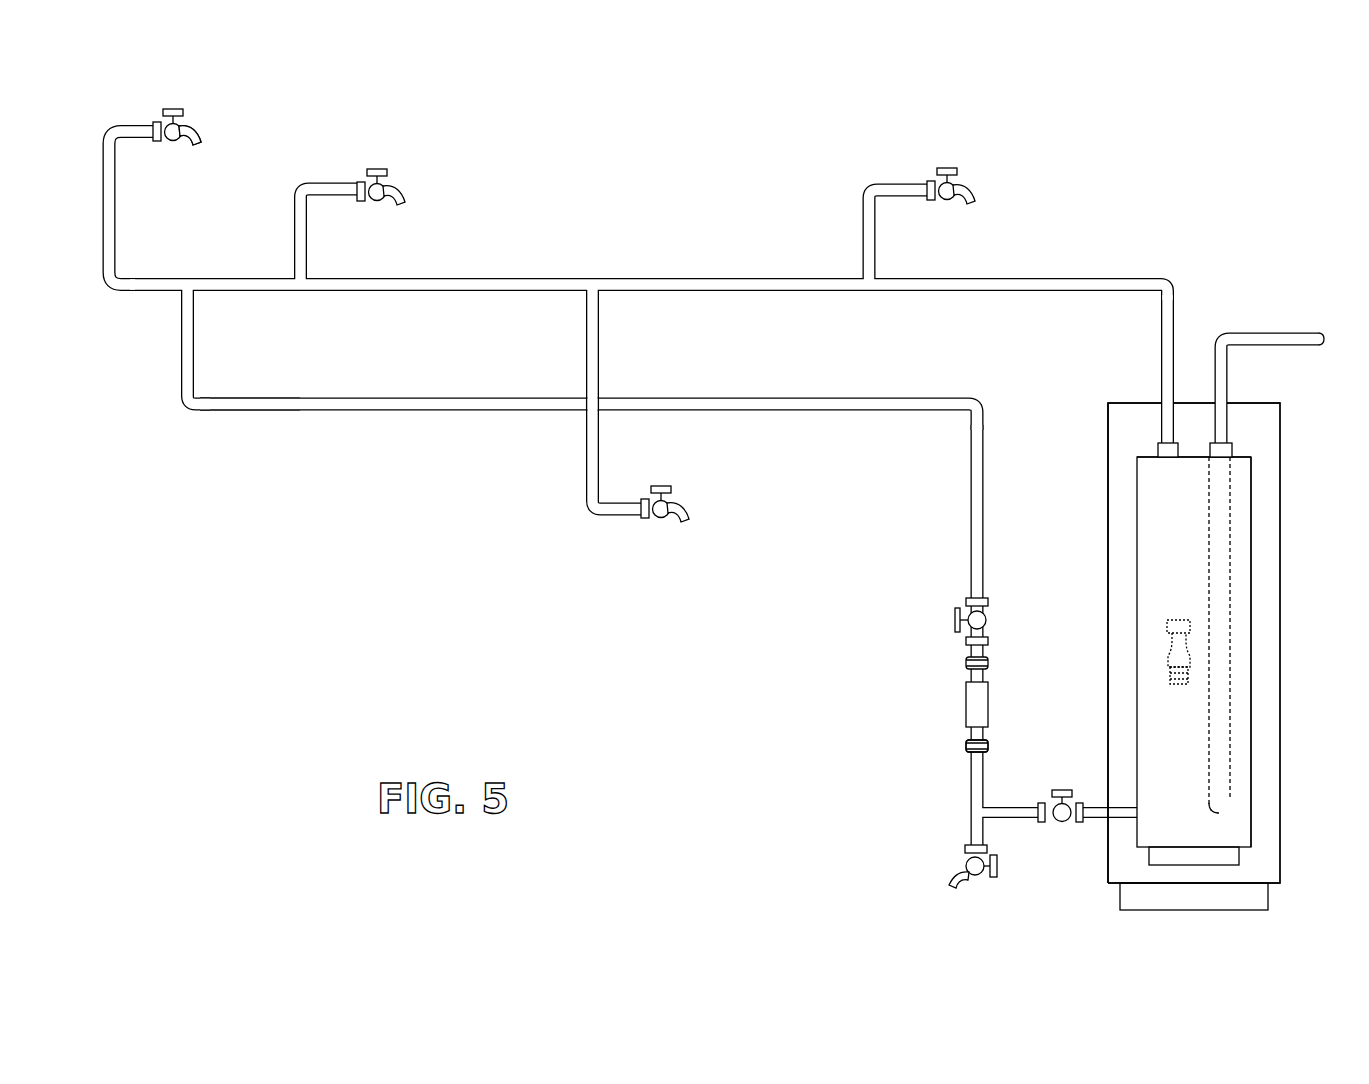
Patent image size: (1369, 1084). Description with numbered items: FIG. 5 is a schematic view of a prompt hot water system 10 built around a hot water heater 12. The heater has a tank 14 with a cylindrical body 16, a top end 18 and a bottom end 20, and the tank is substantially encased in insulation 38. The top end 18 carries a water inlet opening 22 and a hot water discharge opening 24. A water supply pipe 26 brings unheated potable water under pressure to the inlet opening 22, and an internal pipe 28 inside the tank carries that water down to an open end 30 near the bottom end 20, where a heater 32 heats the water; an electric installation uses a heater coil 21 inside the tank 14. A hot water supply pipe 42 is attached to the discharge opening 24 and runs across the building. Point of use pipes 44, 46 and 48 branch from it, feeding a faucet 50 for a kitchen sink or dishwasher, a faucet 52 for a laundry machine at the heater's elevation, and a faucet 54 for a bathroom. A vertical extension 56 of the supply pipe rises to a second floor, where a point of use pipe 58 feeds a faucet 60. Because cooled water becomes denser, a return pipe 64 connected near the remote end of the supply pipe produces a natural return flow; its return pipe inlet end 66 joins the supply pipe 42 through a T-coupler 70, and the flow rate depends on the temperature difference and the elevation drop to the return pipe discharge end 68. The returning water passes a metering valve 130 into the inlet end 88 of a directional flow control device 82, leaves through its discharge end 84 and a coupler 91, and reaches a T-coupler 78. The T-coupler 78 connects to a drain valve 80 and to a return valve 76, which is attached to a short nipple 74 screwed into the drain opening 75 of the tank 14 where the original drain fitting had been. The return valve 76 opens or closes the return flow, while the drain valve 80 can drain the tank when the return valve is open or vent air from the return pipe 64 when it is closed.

The hot water system 10 is at (890, 148).
The hot water heater 12 is at (1312, 729).
The tank 14 is at (1252, 498).
The cylindrical body 16 is at (1252, 557).
The top end 18 is at (1248, 457).
The bottom end 20 is at (1143, 851).
The heater coil 21 is at (1167, 658).
The water inlet opening 22 is at (1232, 452).
The hot water discharge opening 24 is at (1157, 450).
The water supply pipe 26 is at (1273, 332).
The internal pipe 28 is at (1237, 622).
The open end 30 is at (1219, 813).
The heater 32 is at (1239, 857).
The insulation 38 is at (1192, 415).
The hot water supply pipe 42 is at (1022, 278).
The point of use pipe 44 is at (862, 245).
The point of use pipe 46 is at (585, 460).
The point of use pipe 48 is at (293, 227).
The faucet 50 is at (977, 197).
The faucet 52 is at (660, 523).
The faucet 54 is at (408, 193).
The vertical extension 56 is at (102, 262).
The point of use pipe 58 is at (140, 124).
The faucet 60 is at (200, 138).
The return pipe 64 is at (818, 412).
The return pipe inlet end 66 is at (197, 297).
The return pipe discharge end 68 is at (970, 792).
The T-coupler 70 is at (188, 278).
The short nipple 74 is at (1092, 822).
The drain opening 75 is at (1137, 808).
The return valve 76 is at (1062, 822).
The T-coupler 78 is at (970, 815).
The drain valve 80 is at (958, 865).
The directional flow control device 82 is at (965, 705).
The discharge end 84 is at (967, 728).
The inlet end 88 is at (967, 665).
The coupler 91 is at (988, 748).
The metering valve 130 is at (955, 622).